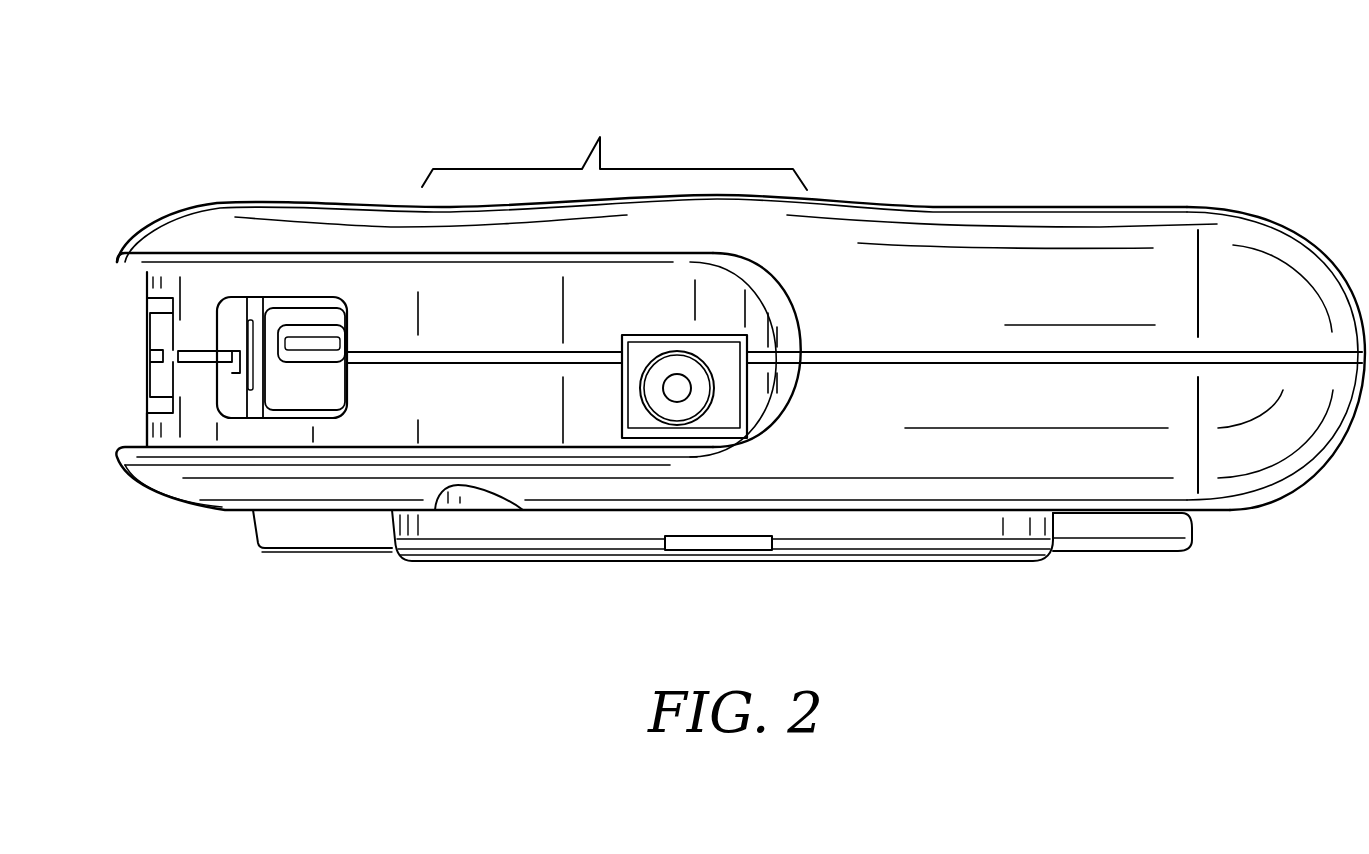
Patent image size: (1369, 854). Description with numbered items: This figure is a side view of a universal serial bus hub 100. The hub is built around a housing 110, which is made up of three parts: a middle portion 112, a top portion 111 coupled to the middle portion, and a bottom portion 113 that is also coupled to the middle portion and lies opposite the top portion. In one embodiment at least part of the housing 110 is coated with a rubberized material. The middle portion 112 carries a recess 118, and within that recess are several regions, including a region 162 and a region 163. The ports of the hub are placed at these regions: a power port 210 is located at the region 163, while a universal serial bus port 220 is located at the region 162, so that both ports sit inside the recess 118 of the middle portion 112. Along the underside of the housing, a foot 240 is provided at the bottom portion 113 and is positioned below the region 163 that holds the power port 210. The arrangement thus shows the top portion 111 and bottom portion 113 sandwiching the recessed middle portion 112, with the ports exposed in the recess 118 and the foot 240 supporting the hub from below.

The universal serial bus hub 100 is at (294, 142).
The housing 110 is at (957, 192).
The top portion 111 is at (149, 228).
The middle portion 112 is at (110, 253).
The bottom portion 113 is at (163, 477).
The recess 118 is at (500, 322).
The region 162 is at (132, 429).
The region 163 is at (614, 145).
The power port 210 is at (667, 373).
The universal serial bus port 220 is at (347, 400).
The foot 240 is at (745, 545).